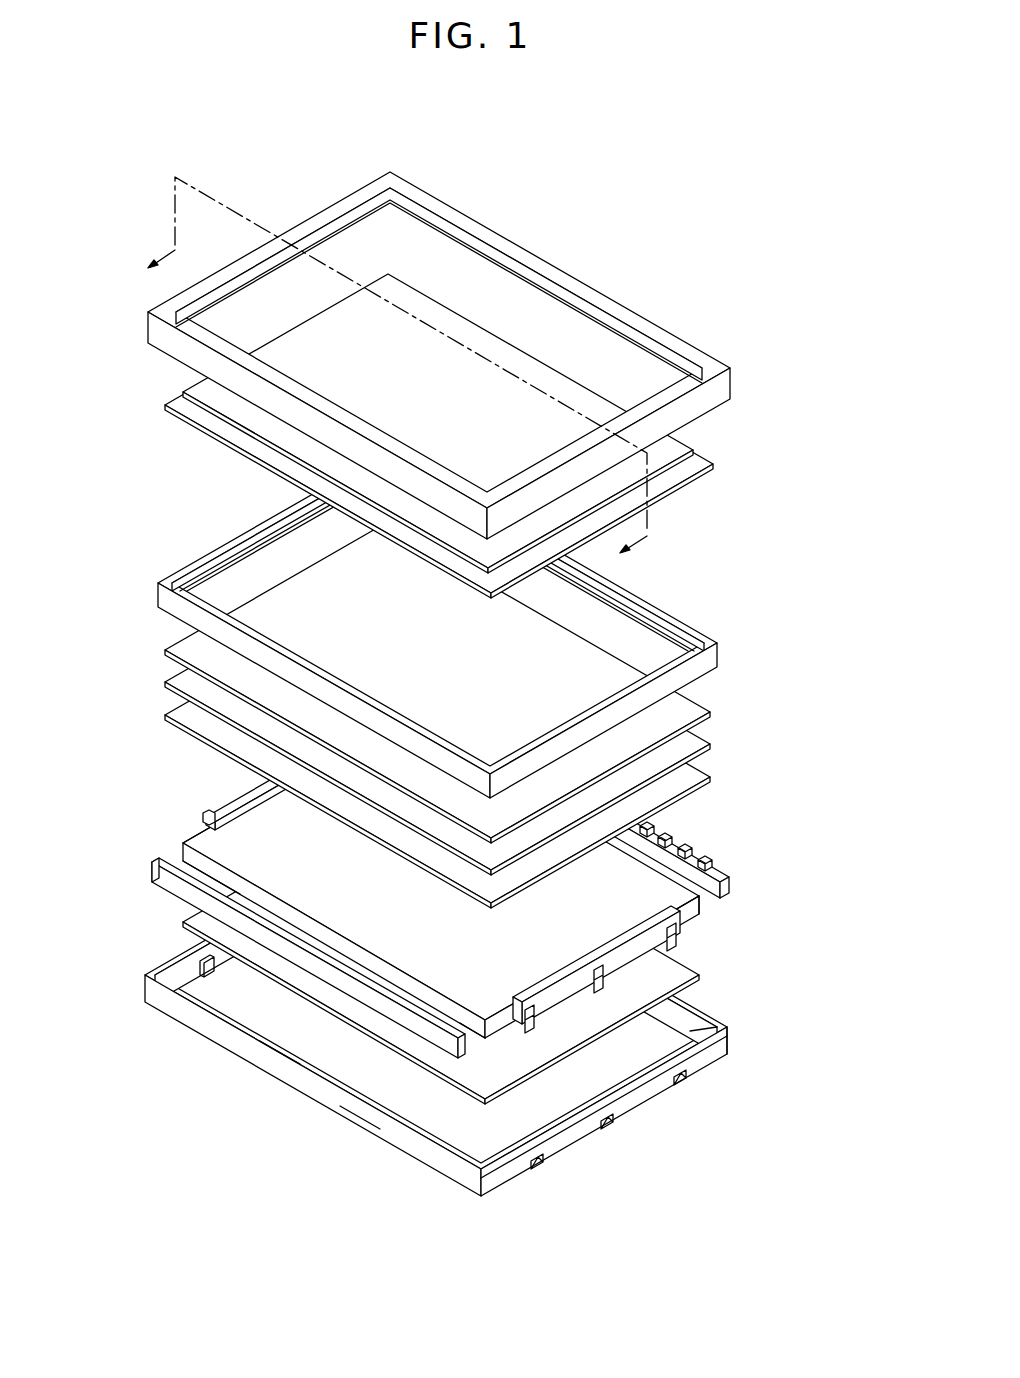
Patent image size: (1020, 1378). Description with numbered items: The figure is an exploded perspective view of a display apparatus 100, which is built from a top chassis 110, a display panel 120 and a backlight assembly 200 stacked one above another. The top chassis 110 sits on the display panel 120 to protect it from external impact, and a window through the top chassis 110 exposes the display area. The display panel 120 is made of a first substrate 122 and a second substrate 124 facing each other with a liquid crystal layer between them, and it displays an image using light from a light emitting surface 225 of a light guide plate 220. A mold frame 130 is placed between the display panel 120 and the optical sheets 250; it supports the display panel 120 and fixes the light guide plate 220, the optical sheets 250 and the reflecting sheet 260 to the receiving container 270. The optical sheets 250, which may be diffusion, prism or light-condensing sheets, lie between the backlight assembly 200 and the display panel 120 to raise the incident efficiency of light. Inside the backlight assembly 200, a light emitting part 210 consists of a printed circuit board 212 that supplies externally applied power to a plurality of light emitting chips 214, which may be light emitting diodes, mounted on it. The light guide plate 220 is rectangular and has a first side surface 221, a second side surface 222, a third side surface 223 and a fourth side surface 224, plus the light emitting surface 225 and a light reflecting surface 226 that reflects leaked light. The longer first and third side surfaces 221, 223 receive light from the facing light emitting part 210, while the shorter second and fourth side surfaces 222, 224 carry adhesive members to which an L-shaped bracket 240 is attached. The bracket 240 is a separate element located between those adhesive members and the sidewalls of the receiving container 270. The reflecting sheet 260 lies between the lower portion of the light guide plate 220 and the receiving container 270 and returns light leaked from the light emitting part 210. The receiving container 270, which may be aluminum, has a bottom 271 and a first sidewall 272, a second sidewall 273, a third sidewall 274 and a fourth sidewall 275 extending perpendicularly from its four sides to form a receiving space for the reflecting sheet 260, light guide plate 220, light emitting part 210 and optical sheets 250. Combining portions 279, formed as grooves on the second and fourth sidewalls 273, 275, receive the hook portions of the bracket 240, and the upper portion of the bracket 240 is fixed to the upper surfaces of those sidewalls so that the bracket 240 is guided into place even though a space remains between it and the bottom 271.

The display apparatus 100 is at (454, 704).
The top chassis 110 is at (732, 386).
The display panel 120 is at (489, 436).
The first substrate 122 is at (713, 470).
The second substrate 124 is at (693, 454).
The mold frame 130 is at (718, 640).
The backlight assembly 200 is at (454, 888).
The light emitting part 210 is at (430, 933).
The printed circuit board 212 is at (732, 885).
The light emitting chips 214 is at (724, 862).
The light guide plate 220 is at (431, 986).
The first side surface 221 is at (699, 898).
The second side surface 222 is at (690, 913).
The third side surface 223 is at (197, 862).
The fourth side surface 224 is at (190, 840).
The light emitting surface 225 is at (212, 816).
The light reflecting surface 226 is at (490, 1036).
The bracket 240 is at (383, 968).
The optical sheets 250 is at (464, 716).
The reflecting sheet 260 is at (600, 1036).
The receiving container 270 is at (432, 1027).
The bottom 271 is at (288, 1027).
The first sidewall 272 is at (713, 1012).
The second sidewall 273 is at (737, 1036).
The third sidewall 274 is at (365, 1120).
The fourth sidewall 275 is at (162, 964).
The combining portions 279 is at (540, 1164).